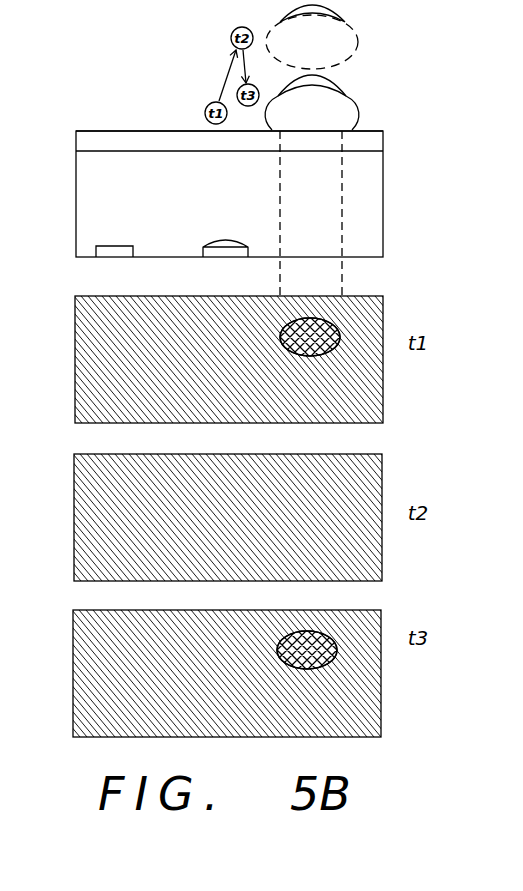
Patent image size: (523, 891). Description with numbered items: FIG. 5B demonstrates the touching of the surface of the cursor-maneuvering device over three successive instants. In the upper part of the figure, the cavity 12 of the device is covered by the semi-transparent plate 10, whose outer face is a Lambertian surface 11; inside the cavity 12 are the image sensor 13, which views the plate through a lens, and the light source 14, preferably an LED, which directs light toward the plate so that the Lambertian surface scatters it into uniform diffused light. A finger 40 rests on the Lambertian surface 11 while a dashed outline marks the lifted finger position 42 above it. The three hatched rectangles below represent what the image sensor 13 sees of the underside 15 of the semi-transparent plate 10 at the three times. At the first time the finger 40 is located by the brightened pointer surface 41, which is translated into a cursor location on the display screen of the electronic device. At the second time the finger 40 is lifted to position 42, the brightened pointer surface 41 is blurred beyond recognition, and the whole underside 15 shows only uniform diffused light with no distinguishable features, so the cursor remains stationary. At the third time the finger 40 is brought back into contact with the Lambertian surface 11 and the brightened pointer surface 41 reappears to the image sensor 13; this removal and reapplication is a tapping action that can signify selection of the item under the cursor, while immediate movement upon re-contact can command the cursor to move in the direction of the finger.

The semi-transparent plate 10 is at (368, 141).
The Lambertian surface 11 is at (153, 130).
The cavity 12 is at (383, 197).
The image sensor 13 is at (212, 253).
The light source 14 is at (122, 252).
The underside of the semi-transparent plate 15 is at (75, 340).
The finger 40 is at (357, 103).
The brightened pointer surface 41 is at (331, 350).
The lifted finger position 42 is at (357, 43).